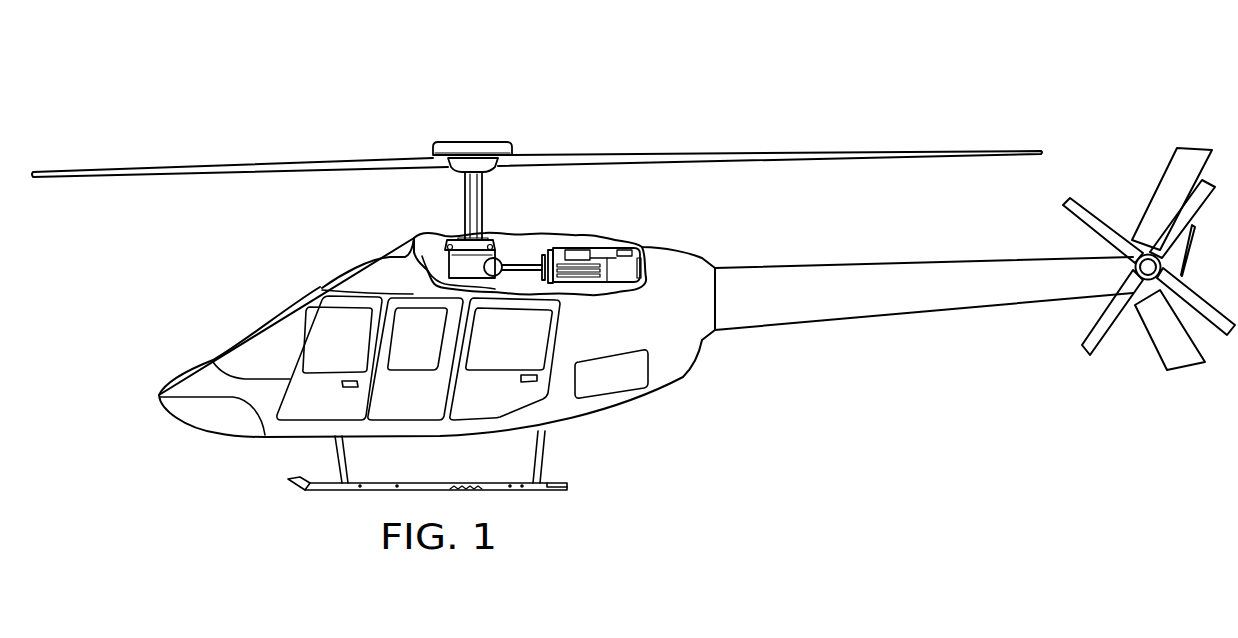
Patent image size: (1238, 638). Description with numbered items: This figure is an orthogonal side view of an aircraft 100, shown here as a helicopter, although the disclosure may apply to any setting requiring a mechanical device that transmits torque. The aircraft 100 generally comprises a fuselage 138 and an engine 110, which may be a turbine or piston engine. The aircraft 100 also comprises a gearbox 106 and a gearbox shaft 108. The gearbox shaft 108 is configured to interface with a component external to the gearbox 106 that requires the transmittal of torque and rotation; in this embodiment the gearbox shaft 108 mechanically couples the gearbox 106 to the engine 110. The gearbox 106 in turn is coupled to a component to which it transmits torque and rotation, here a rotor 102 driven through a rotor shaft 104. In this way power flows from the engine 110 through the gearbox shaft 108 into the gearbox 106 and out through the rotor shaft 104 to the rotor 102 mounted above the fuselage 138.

The aircraft 100 is at (257, 94).
The rotor 102 is at (779, 151).
The rotor shaft 104 is at (464, 210).
The gearbox 106 is at (436, 257).
The gearbox shaft 108 is at (520, 258).
The engine 110 is at (597, 245).
The fuselage 138 is at (265, 318).